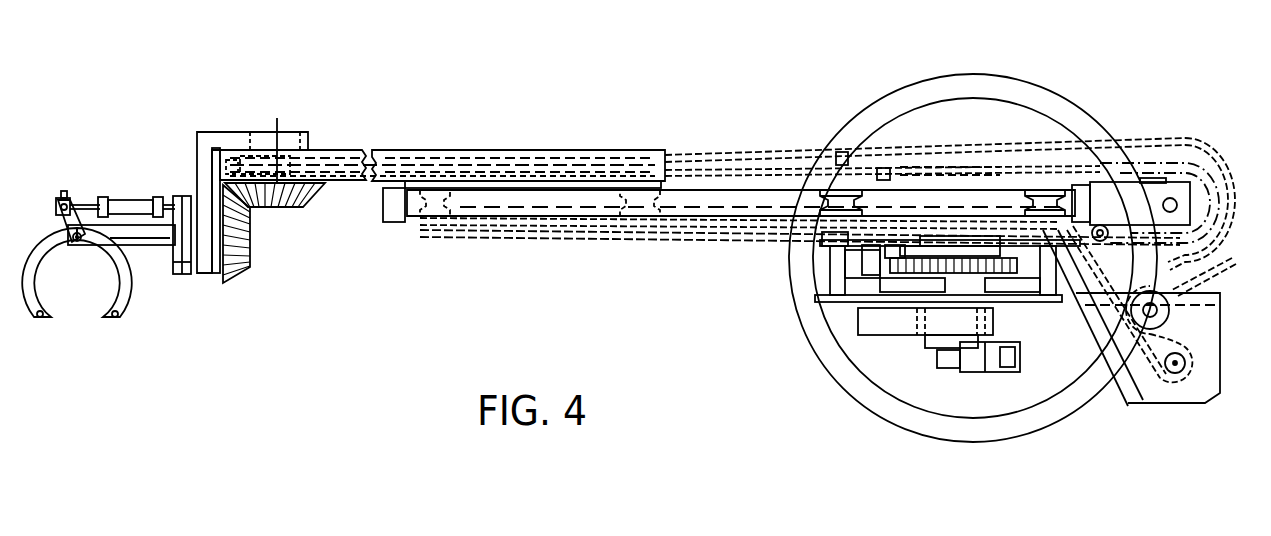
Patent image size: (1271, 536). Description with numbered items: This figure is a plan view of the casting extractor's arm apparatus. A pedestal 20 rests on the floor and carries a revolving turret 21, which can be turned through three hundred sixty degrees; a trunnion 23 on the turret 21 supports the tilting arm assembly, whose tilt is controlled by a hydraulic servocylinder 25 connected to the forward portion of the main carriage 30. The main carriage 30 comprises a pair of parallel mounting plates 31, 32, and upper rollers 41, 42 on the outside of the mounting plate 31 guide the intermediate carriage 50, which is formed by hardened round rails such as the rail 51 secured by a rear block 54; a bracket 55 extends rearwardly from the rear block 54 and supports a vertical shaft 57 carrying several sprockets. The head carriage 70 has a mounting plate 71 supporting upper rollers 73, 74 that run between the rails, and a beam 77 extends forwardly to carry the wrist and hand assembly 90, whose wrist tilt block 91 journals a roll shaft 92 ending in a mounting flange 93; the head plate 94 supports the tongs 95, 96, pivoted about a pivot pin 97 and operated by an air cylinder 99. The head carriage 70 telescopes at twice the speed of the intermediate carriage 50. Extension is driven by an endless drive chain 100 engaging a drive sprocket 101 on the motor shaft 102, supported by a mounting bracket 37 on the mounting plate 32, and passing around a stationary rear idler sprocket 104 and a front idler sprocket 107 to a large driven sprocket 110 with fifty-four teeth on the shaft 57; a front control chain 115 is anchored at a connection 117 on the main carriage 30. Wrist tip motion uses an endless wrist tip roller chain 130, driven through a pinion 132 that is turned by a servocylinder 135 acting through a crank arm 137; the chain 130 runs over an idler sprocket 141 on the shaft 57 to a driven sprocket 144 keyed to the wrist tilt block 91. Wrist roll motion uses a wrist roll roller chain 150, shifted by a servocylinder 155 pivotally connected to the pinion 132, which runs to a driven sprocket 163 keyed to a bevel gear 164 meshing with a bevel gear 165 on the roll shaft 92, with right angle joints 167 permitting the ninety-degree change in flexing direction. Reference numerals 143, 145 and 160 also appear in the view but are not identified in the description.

The pedestal 20 is at (920, 442).
The turret 21 is at (975, 410).
The trunnion 23 is at (868, 340).
The hydraulic servocylinder 25 is at (897, 245).
The main carriage 30 is at (798, 320).
The mounting plate 31 is at (946, 215).
The mounting plate 32 is at (800, 297).
The mounting bracket 37 is at (1195, 404).
The upper roller 41 is at (842, 152).
The upper roller 42 is at (1045, 190).
The intermediate carriage 50 is at (793, 188).
The round rail 51 is at (755, 172).
The rear block 54 is at (1083, 190).
The bracket 55 is at (392, 222).
The vertical shaft 57 is at (1230, 240).
The head carriage 70 is at (418, 150).
The mounting plate 71 is at (594, 181).
The upper roller 73 is at (468, 218).
The upper roller 74 is at (605, 229).
The beam 77 is at (340, 150).
The wrist and hand assembly 90 is at (114, 152).
The wrist tilt block 91 is at (197, 140).
The roll shaft 92 is at (218, 270).
The mounting flange 93 is at (185, 278).
The head plate 94 is at (165, 248).
The tong 95 is at (117, 320).
The tong 96 is at (40, 320).
The pivot pin 97 is at (76, 246).
The air cylinder 99 is at (140, 200).
The drive chain 100 is at (965, 155).
The drive sprocket 101 is at (1175, 373).
The shaft 102 is at (1132, 400).
The rear idler sprocket 104 is at (1170, 310).
The front idler sprocket 107 is at (1032, 290).
The driven sprocket 110 is at (1195, 138).
The front control chain 115 is at (700, 245).
The connection 117 is at (832, 240).
The wrist tip roller chain 130 is at (470, 160).
The pinion 132 is at (1000, 275).
The servocylinder 135 is at (1012, 372).
The crank arm 137 is at (935, 348).
The idler sprocket 141 is at (1210, 175).
The idler sprocket 143 is at (1104, 241).
The driven sprocket 144 is at (250, 160).
The pulley 145 is at (840, 190).
The wrist roll roller chain 150 is at (385, 165).
The servocylinder 155 is at (912, 292).
The end housing 160 is at (1096, 228).
The driven sprocket 163 is at (230, 176).
The bevel gear 164 is at (303, 207).
The bevel gear 165 is at (245, 277).
The right angle joint 167 is at (883, 168).